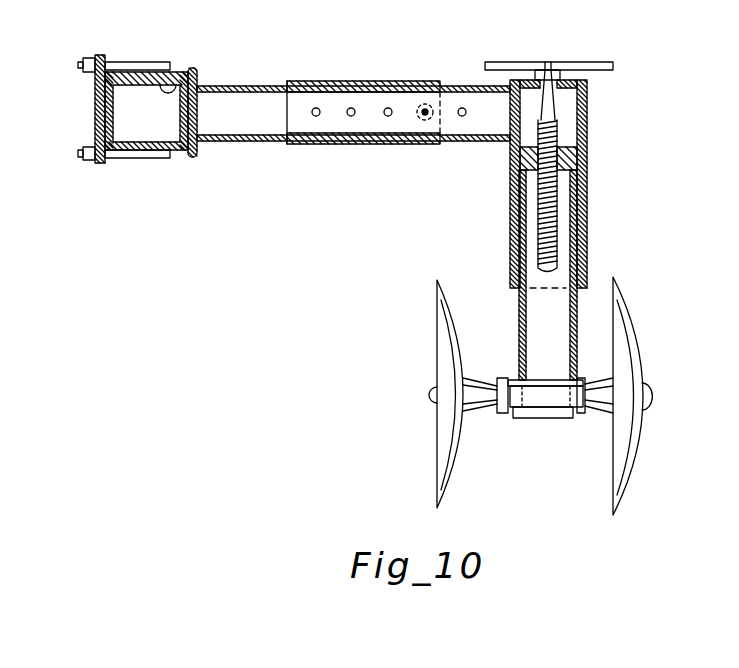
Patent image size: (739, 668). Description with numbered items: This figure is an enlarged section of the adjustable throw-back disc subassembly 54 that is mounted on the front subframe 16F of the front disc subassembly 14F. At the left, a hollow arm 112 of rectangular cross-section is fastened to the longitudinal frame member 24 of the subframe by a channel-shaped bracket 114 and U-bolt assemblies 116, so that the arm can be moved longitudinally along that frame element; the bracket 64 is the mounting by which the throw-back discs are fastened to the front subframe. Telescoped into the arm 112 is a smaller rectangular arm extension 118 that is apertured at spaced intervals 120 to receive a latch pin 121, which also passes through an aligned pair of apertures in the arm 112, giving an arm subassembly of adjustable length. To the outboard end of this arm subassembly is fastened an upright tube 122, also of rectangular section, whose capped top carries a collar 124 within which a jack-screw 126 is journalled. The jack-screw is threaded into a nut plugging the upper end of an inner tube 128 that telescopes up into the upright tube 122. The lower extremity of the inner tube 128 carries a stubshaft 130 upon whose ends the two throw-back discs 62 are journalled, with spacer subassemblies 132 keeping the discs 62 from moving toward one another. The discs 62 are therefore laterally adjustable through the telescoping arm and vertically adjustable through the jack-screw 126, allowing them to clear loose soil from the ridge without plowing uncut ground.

The front disc subassembly 14F is at (148, 117).
The front subframe 16F is at (185, 75).
The longitudinally extending parallel member 24 is at (140, 70).
The adjustable throw-back disc subassembly 54 is at (493, 182).
The throw-back discs 62 is at (455, 445).
The bracket 64 is at (290, 82).
The hollow arm 112 is at (304, 82).
The channel-shaped bracket 114 is at (185, 158).
The U-bolt assemblies 116 is at (95, 145).
The arm extension 118 is at (453, 86).
The apertures 120 is at (388, 108).
The latch pin 121 is at (424, 120).
The upright tube 122 is at (588, 125).
The collar 124 is at (585, 70).
The jack-screw 126 is at (548, 62).
The inner tube 128 is at (580, 230).
The stubshaft 130 is at (548, 407).
The spacer subassemblies 132 is at (478, 380).